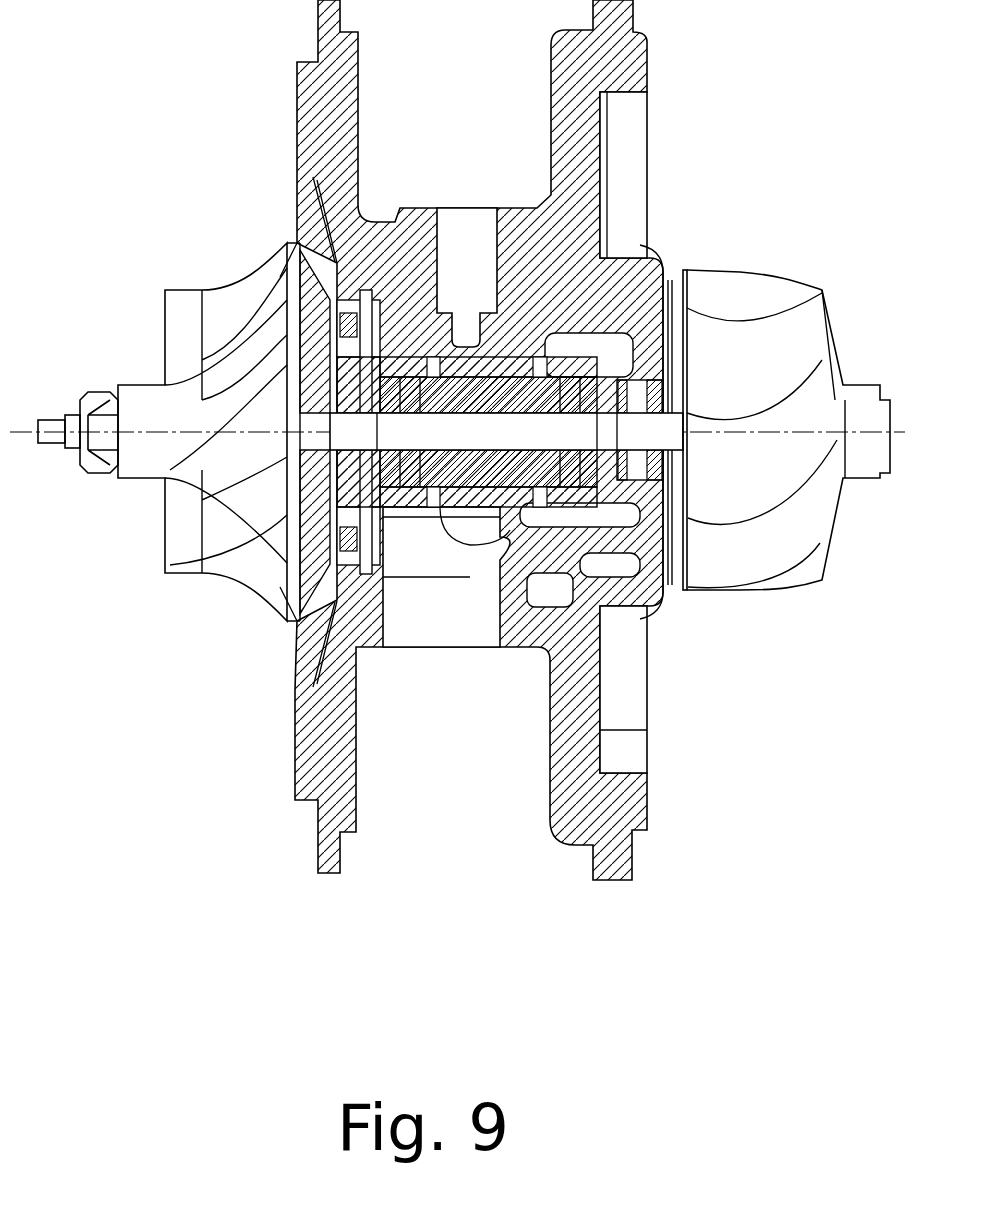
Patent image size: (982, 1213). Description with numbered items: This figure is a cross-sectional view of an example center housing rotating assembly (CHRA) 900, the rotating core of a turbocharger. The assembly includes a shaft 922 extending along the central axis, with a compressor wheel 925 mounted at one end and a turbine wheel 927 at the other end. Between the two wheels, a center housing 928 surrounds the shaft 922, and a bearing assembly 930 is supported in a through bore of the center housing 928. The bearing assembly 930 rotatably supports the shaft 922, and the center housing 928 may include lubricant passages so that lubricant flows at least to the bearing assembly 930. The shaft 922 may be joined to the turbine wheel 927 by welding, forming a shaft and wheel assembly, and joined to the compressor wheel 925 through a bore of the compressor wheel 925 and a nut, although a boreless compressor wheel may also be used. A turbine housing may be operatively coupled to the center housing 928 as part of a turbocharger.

The center housing rotating assembly (CHRA) 900 is at (446, 52).
The shaft 922 is at (503, 440).
The compressor wheel 925 is at (248, 556).
The turbine wheel 927 is at (727, 578).
The center housing 928 is at (415, 268).
The bearing assembly 930 is at (480, 470).